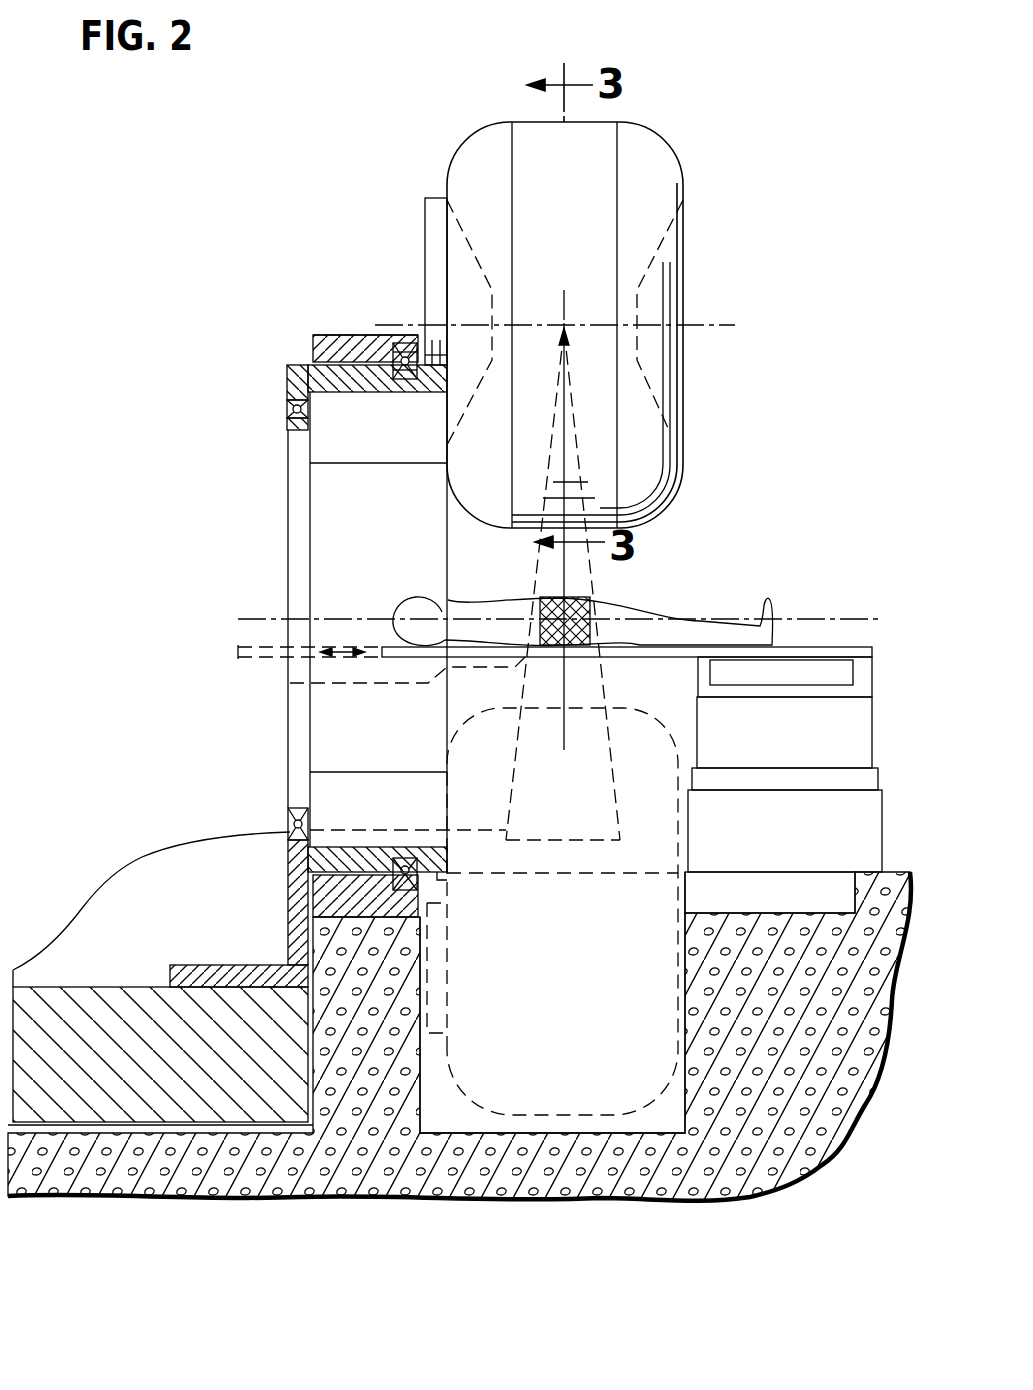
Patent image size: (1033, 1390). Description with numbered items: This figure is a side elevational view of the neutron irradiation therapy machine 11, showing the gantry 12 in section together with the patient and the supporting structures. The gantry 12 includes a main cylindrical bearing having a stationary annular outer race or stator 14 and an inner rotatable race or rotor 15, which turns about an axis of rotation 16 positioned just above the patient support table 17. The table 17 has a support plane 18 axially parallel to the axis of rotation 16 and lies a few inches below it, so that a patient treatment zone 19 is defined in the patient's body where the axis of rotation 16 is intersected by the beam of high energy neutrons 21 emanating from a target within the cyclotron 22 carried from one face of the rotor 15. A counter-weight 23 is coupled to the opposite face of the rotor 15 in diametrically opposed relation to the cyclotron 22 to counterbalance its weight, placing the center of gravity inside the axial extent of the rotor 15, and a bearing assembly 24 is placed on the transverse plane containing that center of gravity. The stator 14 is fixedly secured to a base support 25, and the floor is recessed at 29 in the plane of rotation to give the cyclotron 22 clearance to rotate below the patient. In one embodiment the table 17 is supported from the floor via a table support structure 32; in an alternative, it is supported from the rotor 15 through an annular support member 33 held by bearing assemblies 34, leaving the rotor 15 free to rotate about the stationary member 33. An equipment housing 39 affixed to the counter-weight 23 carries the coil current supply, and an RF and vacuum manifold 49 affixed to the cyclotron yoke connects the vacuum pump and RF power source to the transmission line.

The neutron irradiation therapy machine 11 is at (740, 403).
The gantry 12 is at (313, 336).
The stator 14 is at (343, 347).
The rotor 15 is at (330, 377).
The axis of rotation 16 is at (822, 620).
The patient support table 17 is at (872, 653).
The support plane 18 is at (855, 645).
The patient treatment zone 19 is at (590, 607).
The beam of high energy neutrons 21 is at (545, 560).
The cyclotron 22 is at (683, 215).
The counter-weight 23 is at (68, 1005).
The bearing assembly 24 is at (402, 350).
The base support 25 is at (350, 962).
The floor recess 29 is at (580, 1028).
The table support structure 32 is at (855, 741).
The annular support member 33 is at (296, 466).
The bearing assemblies 34 is at (290, 407).
The equipment housing 39 is at (132, 878).
The RF and vacuum manifold 49 is at (428, 222).